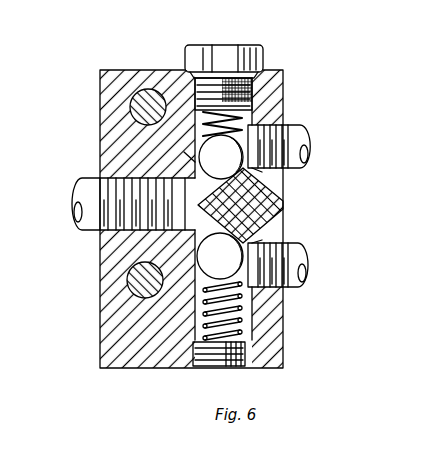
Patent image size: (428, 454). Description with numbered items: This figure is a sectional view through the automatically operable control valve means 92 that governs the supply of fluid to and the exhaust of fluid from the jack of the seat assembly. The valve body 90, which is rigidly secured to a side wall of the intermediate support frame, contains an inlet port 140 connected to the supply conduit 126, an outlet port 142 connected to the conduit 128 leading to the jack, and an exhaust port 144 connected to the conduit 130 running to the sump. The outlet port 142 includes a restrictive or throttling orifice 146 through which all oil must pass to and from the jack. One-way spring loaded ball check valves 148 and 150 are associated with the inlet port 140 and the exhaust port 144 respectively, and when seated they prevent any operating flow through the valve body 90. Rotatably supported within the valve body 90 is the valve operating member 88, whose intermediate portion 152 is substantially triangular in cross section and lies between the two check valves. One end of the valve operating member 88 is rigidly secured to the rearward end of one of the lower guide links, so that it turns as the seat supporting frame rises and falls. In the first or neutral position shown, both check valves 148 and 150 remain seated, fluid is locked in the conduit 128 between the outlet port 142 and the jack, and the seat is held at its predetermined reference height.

The valve body 90 is at (124, 82).
The automatically operable control valve means 92 is at (266, 64).
The conduit 126 is at (297, 130).
The conduit 128 is at (74, 192).
The conduit 130 is at (300, 256).
The inlet port 140 is at (270, 174).
The outlet port 142 is at (166, 228).
The exhaust port 144 is at (262, 238).
The restrictive or throttling orifice 146 is at (200, 252).
The one-way spring loaded ball check valve 148 is at (202, 146).
The one-way spring loaded ball check valve 150 is at (203, 285).
The intermediate portion 152 is at (283, 204).
The valve operating member 88 is at (184, 156).